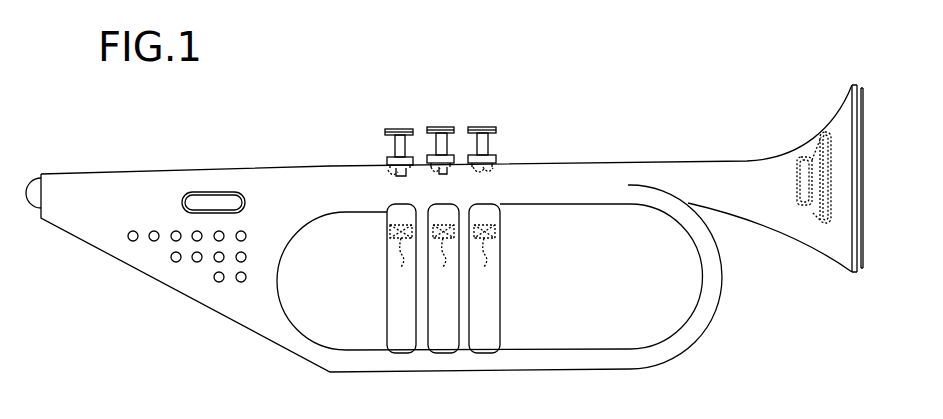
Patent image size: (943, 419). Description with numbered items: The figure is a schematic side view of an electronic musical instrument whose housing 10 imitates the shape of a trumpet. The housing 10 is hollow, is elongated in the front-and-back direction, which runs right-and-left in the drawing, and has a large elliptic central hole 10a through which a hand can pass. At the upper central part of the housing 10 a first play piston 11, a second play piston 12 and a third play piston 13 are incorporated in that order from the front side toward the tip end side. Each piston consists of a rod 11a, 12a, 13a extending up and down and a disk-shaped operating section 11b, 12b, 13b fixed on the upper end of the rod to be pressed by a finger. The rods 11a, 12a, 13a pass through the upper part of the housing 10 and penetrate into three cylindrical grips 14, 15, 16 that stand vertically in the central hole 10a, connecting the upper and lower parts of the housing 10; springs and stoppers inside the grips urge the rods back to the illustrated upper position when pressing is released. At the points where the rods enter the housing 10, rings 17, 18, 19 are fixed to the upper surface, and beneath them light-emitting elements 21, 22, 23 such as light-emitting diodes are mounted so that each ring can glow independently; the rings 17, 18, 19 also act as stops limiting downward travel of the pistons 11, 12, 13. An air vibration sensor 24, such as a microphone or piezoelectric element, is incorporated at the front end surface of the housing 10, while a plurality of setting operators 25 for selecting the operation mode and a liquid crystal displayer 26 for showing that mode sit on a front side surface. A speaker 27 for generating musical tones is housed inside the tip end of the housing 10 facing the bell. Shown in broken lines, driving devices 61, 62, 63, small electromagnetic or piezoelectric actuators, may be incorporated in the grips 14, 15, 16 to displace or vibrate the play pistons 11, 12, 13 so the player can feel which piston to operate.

The housing 10 is at (583, 163).
The central hole 10a is at (605, 301).
The first play piston 11 is at (372, 100).
The rod 11a is at (395, 148).
The disk-shaped operating section 11b is at (400, 127).
The second play piston 12 is at (438, 92).
The rod 12a is at (448, 143).
The disk-shaped operating section 12b is at (437, 125).
The third play piston 13 is at (514, 98).
The rod 13a is at (488, 144).
The disk-shaped operating section 13b is at (487, 125).
The cylindrical grip 14 is at (387, 290).
The cylindrical grip 15 is at (427, 308).
The cylindrical grip 16 is at (500, 313).
The ring 17 is at (402, 174).
The ring 18 is at (443, 170).
The ring 19 is at (487, 170).
The light-emitting element 21 is at (392, 172).
The light-emitting element 22 is at (435, 168).
The light-emitting element 23 is at (478, 172).
The air vibration sensor 24 is at (26, 207).
The setting operators 25 is at (188, 270).
The displayer 26 is at (238, 199).
The speaker 27 is at (816, 218).
The driving device 61 is at (404, 259).
The driving device 62 is at (446, 259).
The driving device 63 is at (487, 259).